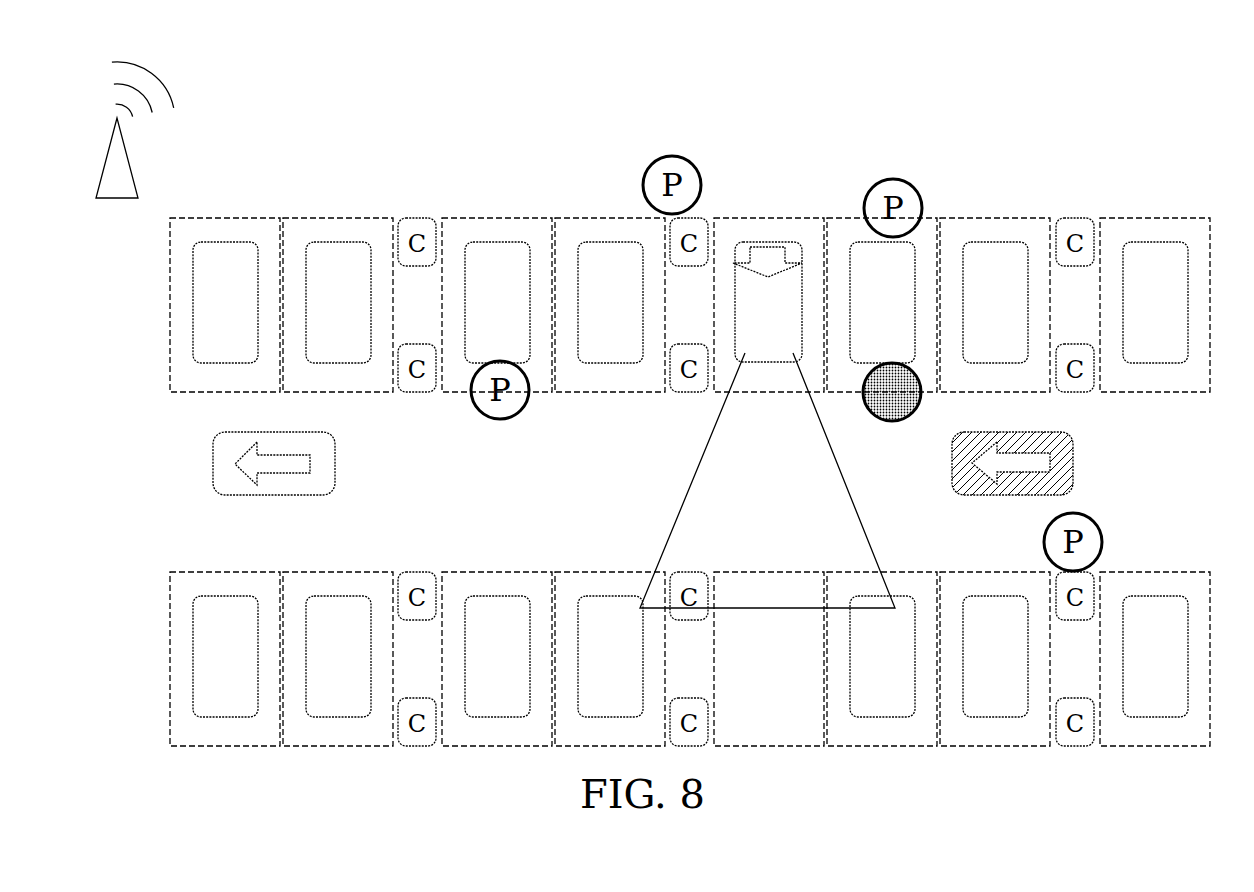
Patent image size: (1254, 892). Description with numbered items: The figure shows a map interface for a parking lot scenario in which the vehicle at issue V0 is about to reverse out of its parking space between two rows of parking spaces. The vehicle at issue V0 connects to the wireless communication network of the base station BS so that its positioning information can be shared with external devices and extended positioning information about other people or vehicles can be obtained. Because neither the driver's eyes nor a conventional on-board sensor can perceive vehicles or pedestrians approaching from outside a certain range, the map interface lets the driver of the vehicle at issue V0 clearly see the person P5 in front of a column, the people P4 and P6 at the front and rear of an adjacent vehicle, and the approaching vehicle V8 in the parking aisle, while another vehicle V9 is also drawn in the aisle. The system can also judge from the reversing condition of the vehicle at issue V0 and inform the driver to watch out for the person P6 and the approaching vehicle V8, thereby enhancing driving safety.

The base station BS is at (134, 182).
The vehicle at issue V0 is at (768, 247).
The vehicle V9 is at (335, 462).
The approaching vehicle V8 is at (1073, 462).
The person P4 is at (893, 180).
The person P5 is at (672, 157).
The person P6 is at (892, 421).